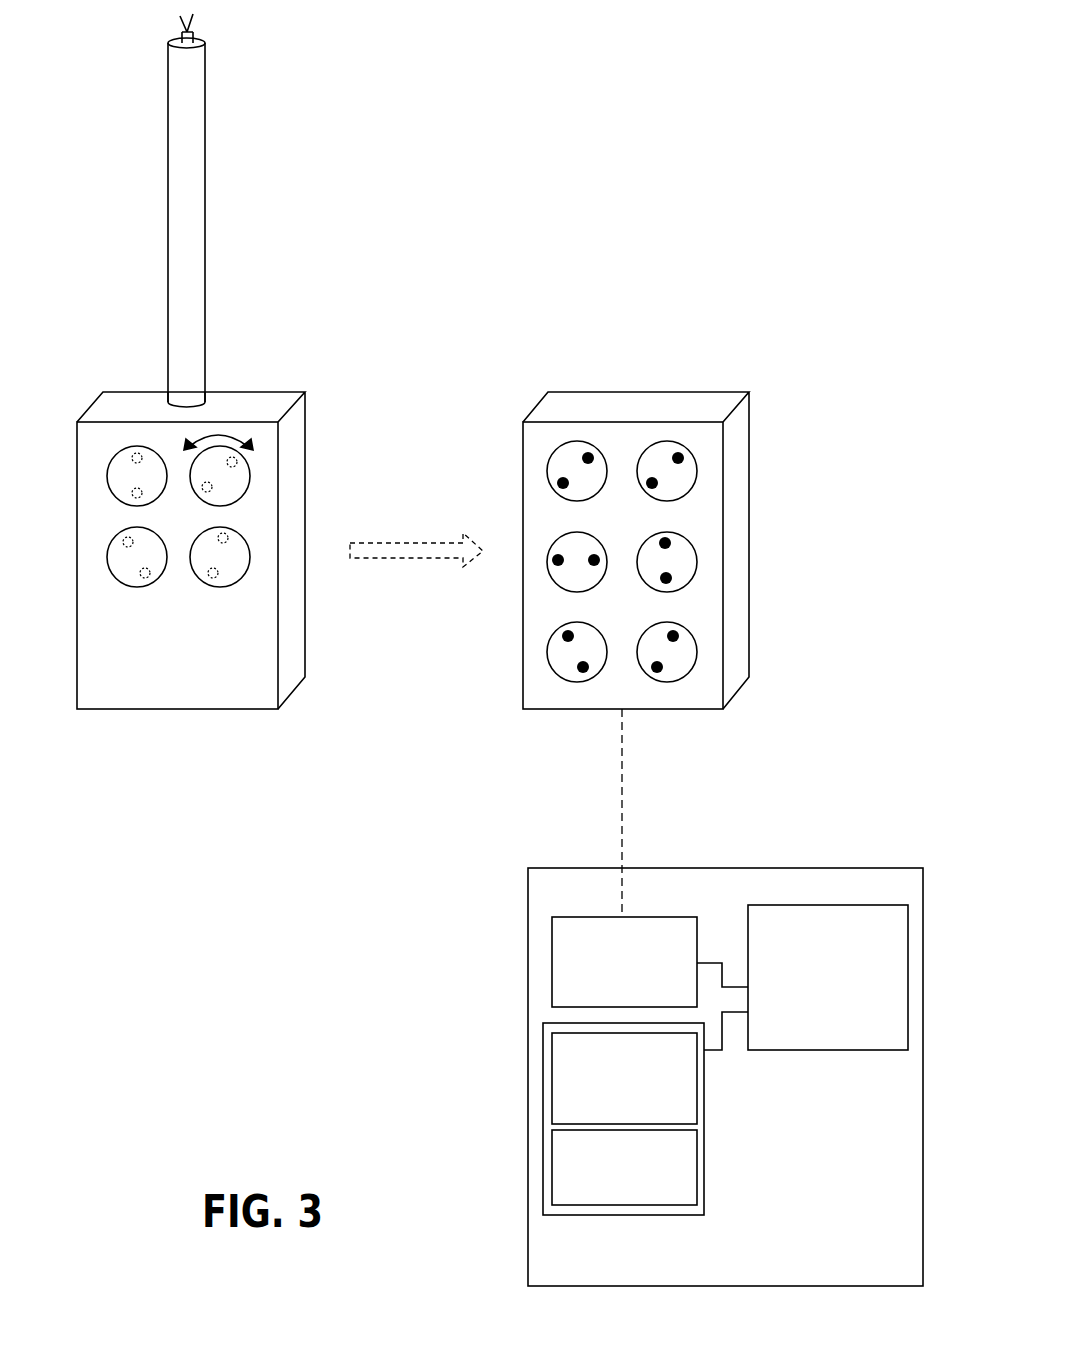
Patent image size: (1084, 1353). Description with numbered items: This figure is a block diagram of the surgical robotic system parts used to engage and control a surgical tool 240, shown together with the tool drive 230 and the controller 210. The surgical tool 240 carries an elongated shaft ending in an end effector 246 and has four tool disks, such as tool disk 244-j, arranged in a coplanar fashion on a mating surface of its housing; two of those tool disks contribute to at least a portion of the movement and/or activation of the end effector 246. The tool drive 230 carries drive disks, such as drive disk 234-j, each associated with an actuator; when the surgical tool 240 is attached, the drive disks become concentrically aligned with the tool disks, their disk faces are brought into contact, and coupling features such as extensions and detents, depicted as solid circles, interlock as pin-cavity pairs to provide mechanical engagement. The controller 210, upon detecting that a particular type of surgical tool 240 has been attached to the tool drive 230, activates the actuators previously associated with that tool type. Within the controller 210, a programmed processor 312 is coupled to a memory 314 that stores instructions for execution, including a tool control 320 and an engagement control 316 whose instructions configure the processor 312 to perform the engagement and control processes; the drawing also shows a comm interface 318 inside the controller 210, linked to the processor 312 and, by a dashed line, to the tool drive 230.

The end effector 246 is at (195, 32).
The surgical tool 240 is at (229, 361).
The tool disk 244-j is at (250, 481).
The drive disk 234-j is at (550, 483).
The tool drive 230 is at (579, 502).
The communication interface 318 is at (638, 1000).
The processor 312 is at (845, 1003).
The engagement control 316 is at (638, 1115).
The tool control 320 is at (624, 1167).
The memory 314 is at (698, 1119).
The controller 210 is at (742, 1275).